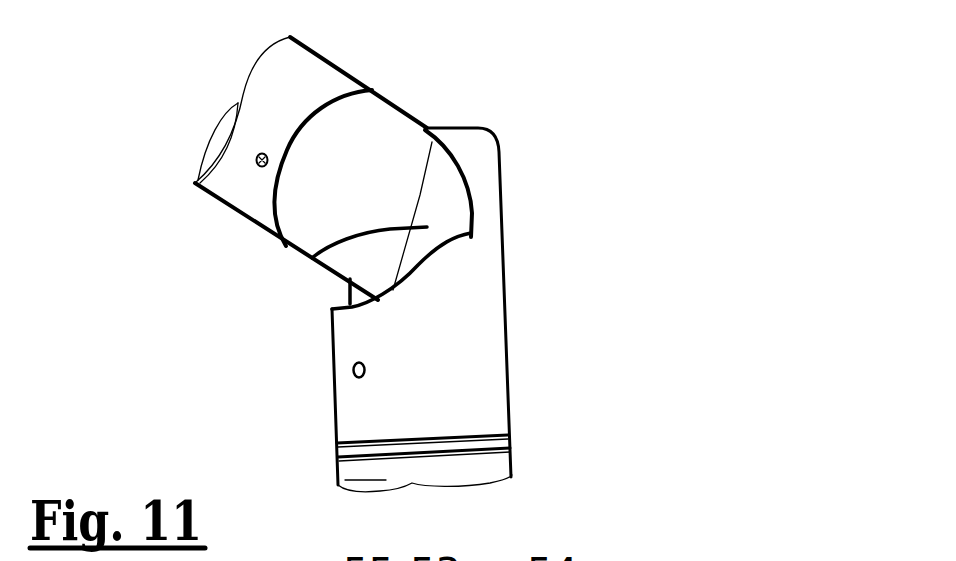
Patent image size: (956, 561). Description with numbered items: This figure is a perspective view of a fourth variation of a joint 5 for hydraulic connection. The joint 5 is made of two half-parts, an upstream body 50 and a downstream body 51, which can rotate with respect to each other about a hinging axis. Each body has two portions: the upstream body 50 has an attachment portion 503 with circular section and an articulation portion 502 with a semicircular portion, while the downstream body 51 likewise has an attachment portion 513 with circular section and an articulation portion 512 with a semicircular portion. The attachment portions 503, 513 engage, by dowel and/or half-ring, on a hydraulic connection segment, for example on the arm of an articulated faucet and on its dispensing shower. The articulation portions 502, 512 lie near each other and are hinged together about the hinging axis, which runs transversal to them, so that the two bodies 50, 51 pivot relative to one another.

The joint 5 is at (549, 155).
The upstream body 50 is at (288, 177).
The articulation portion 502 is at (310, 257).
The attachment portion 503 is at (385, 117).
The downstream body 51 is at (473, 313).
The articulation portion 512 is at (473, 160).
The attachment portion 513 is at (342, 356).